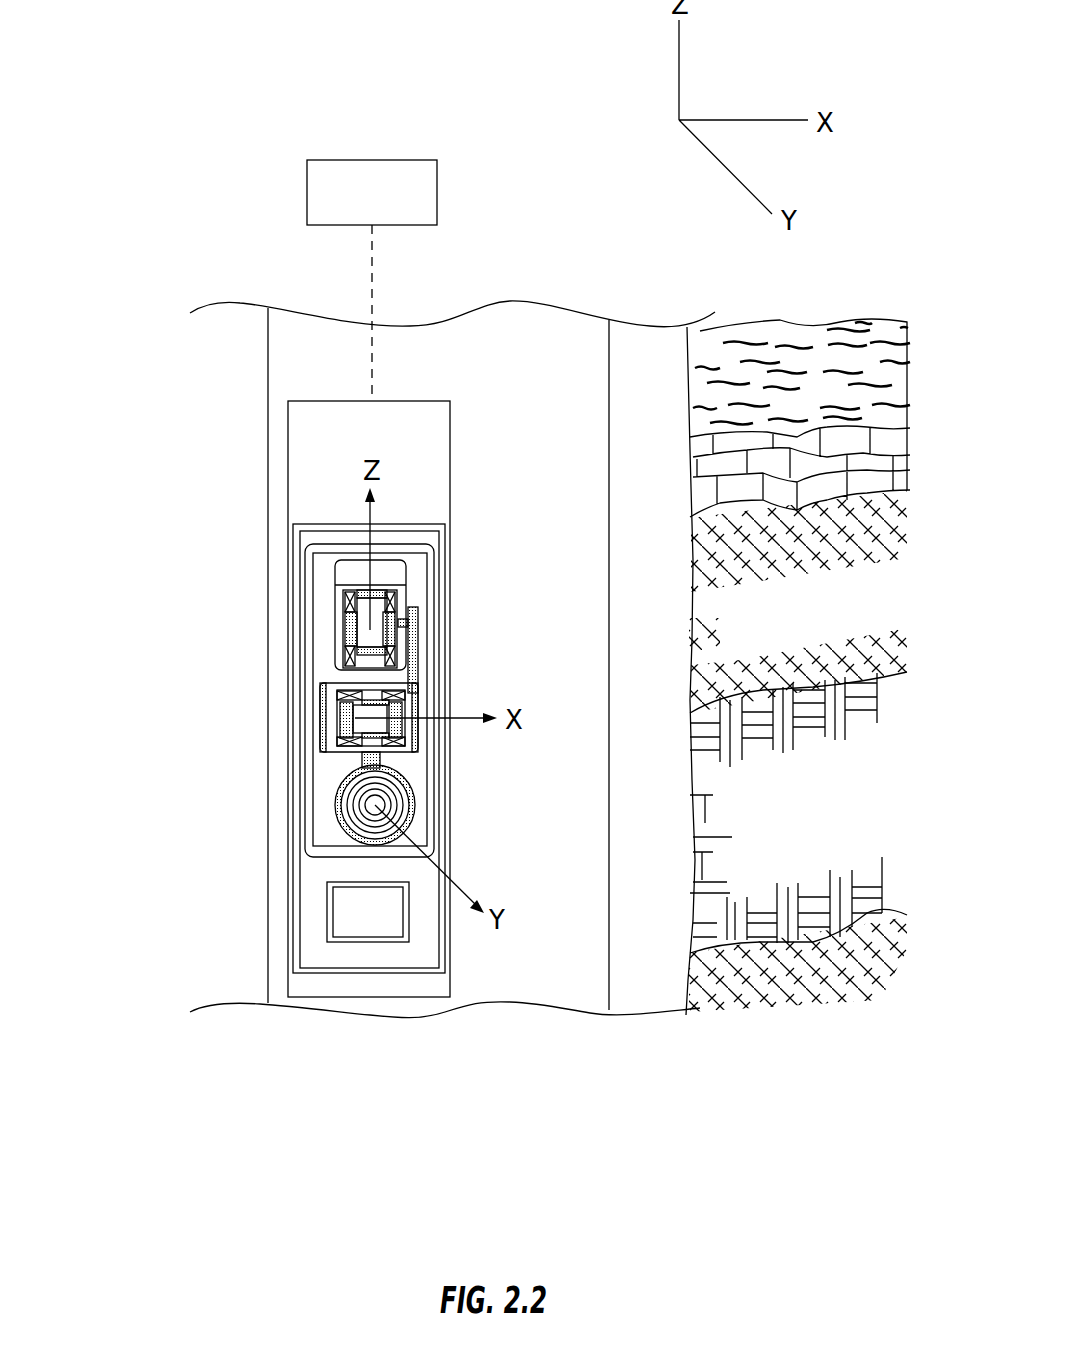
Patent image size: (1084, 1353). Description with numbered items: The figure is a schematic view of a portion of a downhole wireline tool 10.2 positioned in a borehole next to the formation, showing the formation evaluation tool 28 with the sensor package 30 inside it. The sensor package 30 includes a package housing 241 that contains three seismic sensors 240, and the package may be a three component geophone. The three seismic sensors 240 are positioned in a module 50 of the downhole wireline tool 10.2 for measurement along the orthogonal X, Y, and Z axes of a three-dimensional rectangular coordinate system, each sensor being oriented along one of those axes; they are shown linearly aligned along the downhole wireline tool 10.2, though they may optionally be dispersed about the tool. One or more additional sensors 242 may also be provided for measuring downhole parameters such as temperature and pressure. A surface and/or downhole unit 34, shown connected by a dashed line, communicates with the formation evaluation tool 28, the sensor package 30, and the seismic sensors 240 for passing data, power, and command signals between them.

The downhole wireline tool 10.2 is at (212, 286).
The formation evaluation tool 28 is at (313, 973).
The sensor package 30 is at (330, 546).
The surface and/or downhole unit 34 is at (372, 280).
The module 50 is at (609, 725).
The seismic sensors 240 is at (340, 780).
The package housing 241 is at (375, 805).
The additional sensors 242 is at (379, 925).